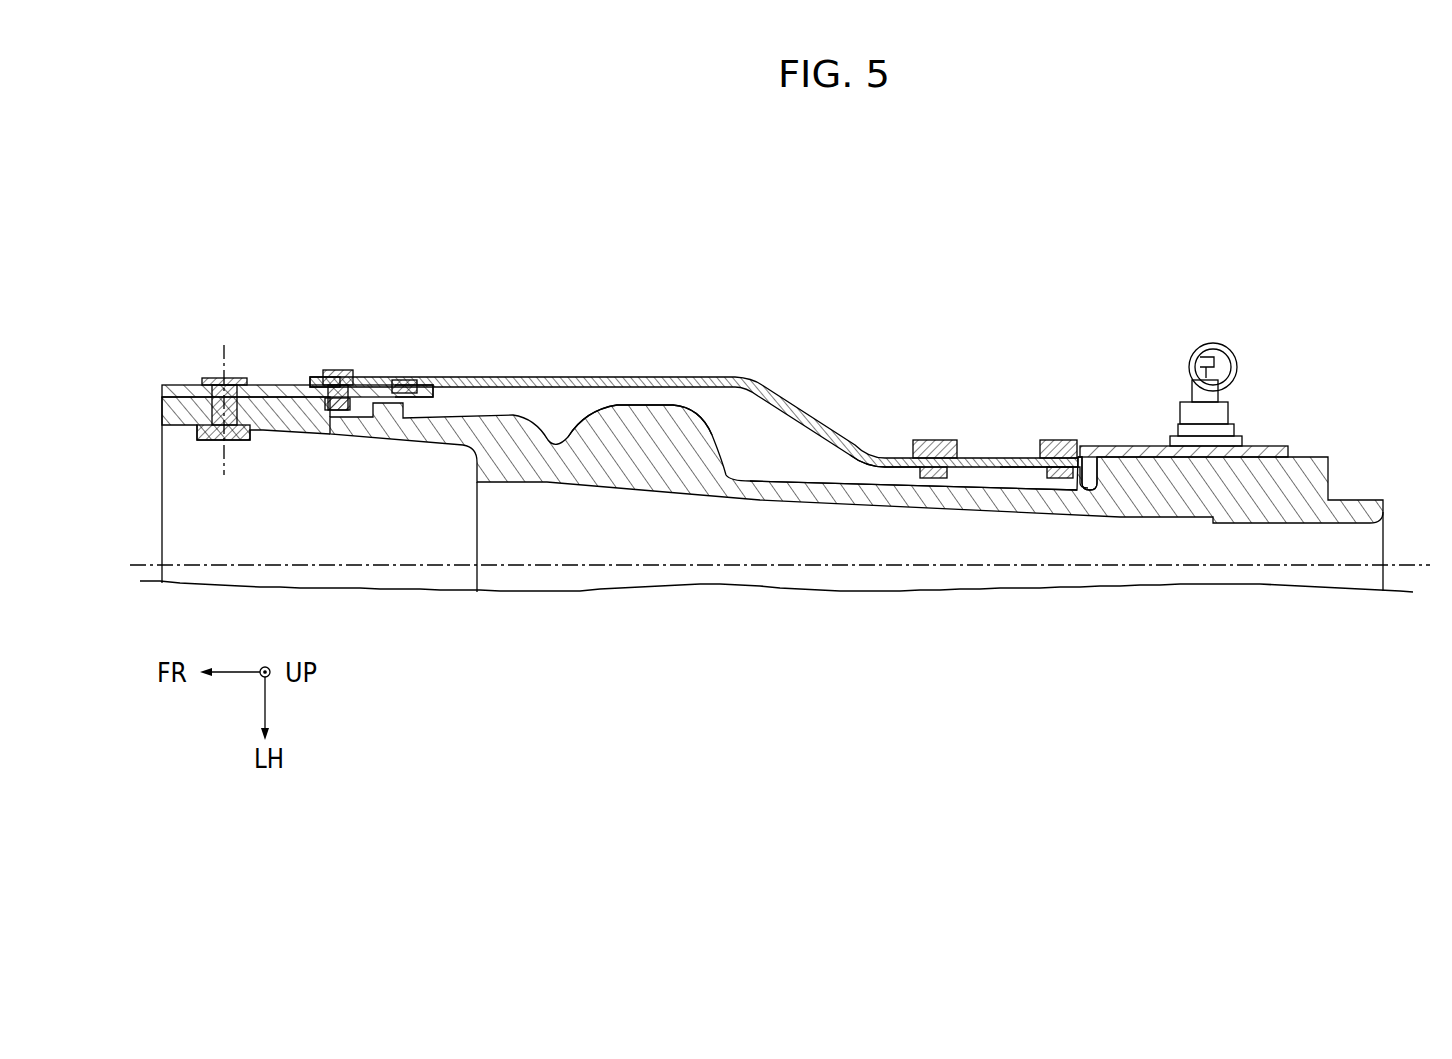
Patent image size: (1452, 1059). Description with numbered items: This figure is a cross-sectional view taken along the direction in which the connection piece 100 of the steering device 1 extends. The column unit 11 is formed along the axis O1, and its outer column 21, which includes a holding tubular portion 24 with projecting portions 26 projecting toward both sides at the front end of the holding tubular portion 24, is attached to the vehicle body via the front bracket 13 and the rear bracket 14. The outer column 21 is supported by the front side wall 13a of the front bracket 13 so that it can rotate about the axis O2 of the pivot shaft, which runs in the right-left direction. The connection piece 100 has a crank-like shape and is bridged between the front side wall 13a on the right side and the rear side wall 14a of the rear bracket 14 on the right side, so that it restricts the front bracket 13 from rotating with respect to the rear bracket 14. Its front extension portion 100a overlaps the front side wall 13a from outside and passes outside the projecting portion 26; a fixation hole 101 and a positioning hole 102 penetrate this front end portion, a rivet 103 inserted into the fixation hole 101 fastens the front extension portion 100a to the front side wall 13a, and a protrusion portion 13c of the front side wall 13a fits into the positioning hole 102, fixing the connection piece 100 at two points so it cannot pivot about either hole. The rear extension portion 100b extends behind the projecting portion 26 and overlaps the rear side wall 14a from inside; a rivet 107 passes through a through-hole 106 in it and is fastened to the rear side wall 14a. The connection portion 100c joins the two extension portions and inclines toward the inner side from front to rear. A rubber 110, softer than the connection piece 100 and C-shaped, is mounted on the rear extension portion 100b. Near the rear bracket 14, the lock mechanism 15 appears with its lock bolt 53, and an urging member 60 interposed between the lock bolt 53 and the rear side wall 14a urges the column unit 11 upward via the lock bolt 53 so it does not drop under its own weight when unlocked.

The steering device 1 is at (1230, 310).
The column unit 11 is at (772, 398).
The front bracket 13 is at (274, 335).
The front side wall 13a is at (183, 383).
The protrusion portion 13c is at (408, 382).
The rear bracket 14 is at (1264, 433).
The rear side wall 14a is at (1275, 446).
The lock mechanism 15 is at (1230, 367).
The outer column 21 is at (537, 408).
The holding tubular portion 24 is at (823, 482).
The projecting portion 26 is at (690, 428).
The lock bolt 53 is at (1212, 398).
The urging member 60 is at (1238, 358).
The connection piece 100 is at (765, 372).
The front extension portion 100a is at (367, 376).
The rear extension portion 100b is at (998, 456).
The connection portion 100c is at (860, 442).
The fixation hole 101 is at (333, 412).
The positioning hole 102 is at (410, 398).
The rivet 103 is at (333, 370).
The through-hole 106 is at (1086, 487).
The rivet 107 is at (1062, 440).
The rubber 110 is at (936, 440).
The axis O1 is at (1400, 565).
The axis O2 is at (224, 345).